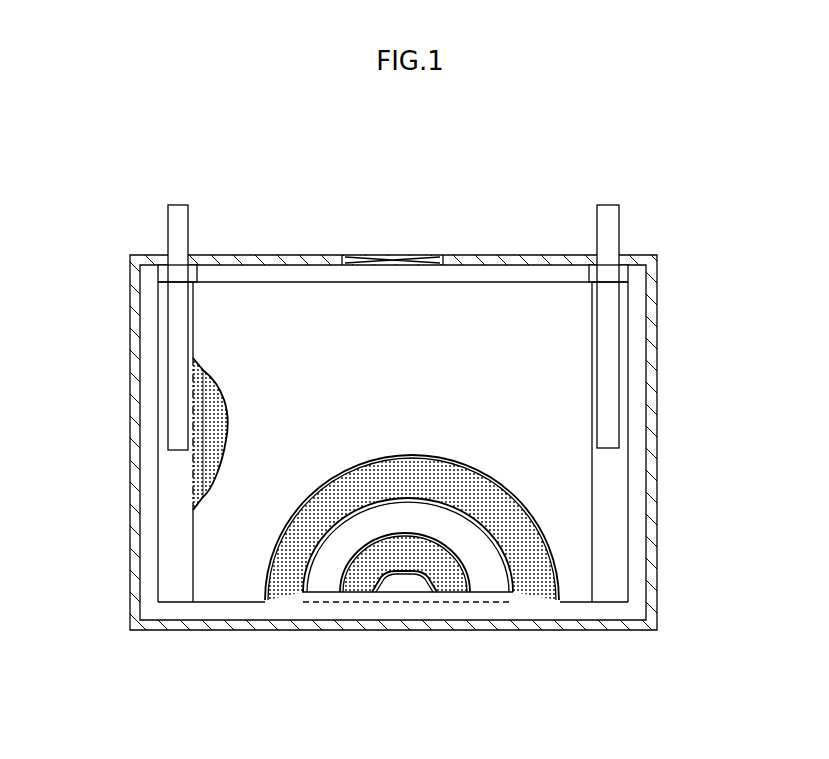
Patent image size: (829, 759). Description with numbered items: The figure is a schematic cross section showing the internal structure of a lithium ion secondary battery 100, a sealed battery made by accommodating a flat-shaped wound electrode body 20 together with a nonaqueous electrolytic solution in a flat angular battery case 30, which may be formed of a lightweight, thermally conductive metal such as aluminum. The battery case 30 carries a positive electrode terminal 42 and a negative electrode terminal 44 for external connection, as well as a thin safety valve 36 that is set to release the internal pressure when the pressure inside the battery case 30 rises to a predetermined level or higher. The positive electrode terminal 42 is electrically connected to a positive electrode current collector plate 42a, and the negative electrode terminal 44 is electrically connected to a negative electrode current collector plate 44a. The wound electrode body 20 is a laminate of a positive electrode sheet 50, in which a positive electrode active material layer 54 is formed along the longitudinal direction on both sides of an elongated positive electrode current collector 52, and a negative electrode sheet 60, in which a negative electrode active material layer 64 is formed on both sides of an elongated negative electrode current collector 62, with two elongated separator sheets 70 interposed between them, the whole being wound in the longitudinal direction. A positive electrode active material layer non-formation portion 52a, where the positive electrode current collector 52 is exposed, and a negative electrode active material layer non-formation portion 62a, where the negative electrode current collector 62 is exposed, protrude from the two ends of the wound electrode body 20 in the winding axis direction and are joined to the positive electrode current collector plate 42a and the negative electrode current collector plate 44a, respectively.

The lithium ion secondary battery 100 is at (655, 222).
The wound electrode body 20 is at (286, 307).
The battery case 30 is at (657, 358).
The safety valve 36 is at (397, 255).
The positive electrode terminal 42 is at (178, 212).
The positive electrode current collector plate 42a is at (180, 345).
The negative electrode terminal 44 is at (609, 212).
The negative electrode current collector plate 44a is at (610, 308).
The positive electrode sheet 50 is at (285, 585).
The positive electrode current collector 52 is at (158, 500).
The positive electrode active material layer non-formation portion 52a is at (173, 578).
The positive electrode active material layer 54 is at (213, 408).
The negative electrode sheet 60 is at (358, 583).
The negative electrode current collector 62 is at (628, 463).
The negative electrode active material layer non-formation portion 62a is at (615, 507).
The negative electrode active material layer 64 is at (402, 638).
The separator sheet 70 is at (228, 535).